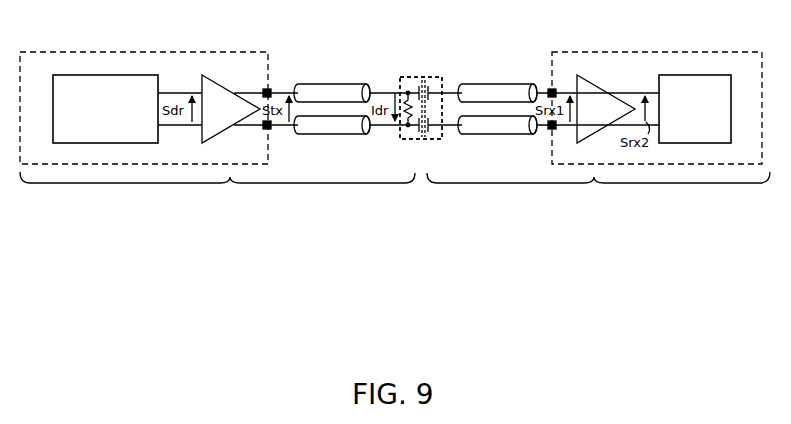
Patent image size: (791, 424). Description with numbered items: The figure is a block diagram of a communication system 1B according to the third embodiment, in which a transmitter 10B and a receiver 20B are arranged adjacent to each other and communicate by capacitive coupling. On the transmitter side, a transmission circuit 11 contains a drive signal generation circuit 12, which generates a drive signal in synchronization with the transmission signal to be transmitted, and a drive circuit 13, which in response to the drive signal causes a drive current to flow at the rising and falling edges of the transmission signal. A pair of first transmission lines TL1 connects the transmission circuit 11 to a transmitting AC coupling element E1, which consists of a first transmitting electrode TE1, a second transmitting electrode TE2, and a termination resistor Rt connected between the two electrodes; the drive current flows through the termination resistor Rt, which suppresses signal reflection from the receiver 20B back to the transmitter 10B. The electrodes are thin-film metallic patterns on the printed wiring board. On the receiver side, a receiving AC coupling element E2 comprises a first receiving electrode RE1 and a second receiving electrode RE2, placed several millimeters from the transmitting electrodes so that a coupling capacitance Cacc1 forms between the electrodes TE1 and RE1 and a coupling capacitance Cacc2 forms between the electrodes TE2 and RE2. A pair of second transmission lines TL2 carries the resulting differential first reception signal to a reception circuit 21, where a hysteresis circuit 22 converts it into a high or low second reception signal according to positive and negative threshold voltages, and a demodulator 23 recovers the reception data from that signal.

The transmission circuit 11 is at (168, 52).
The drive signal generation circuit 12 is at (53, 134).
The drive circuit 13 is at (222, 132).
The reception circuit 21 is at (655, 52).
The hysteresis circuit 22 is at (586, 138).
The demodulator 23 is at (700, 143).
The transmitter 10B is at (217, 192).
The receiver 20B is at (598, 192).
The communication system 1B is at (426, 267).
The first transmission line TL1 is at (335, 84).
The second transmission line TL2 is at (500, 84).
The termination resistor Rt is at (405, 97).
The transmitting AC coupling element E1 is at (400, 136).
The receiving AC coupling element E2 is at (443, 136).
The first transmitting electrode TE1 is at (418, 85).
The second transmitting electrode TE2 is at (418, 133).
The first receiving electrode RE1 is at (429, 85).
The second receiving electrode RE2 is at (429, 133).
The coupling capacitance Cacc1 is at (424, 76).
The coupling capacitance Cacc2 is at (424, 141).